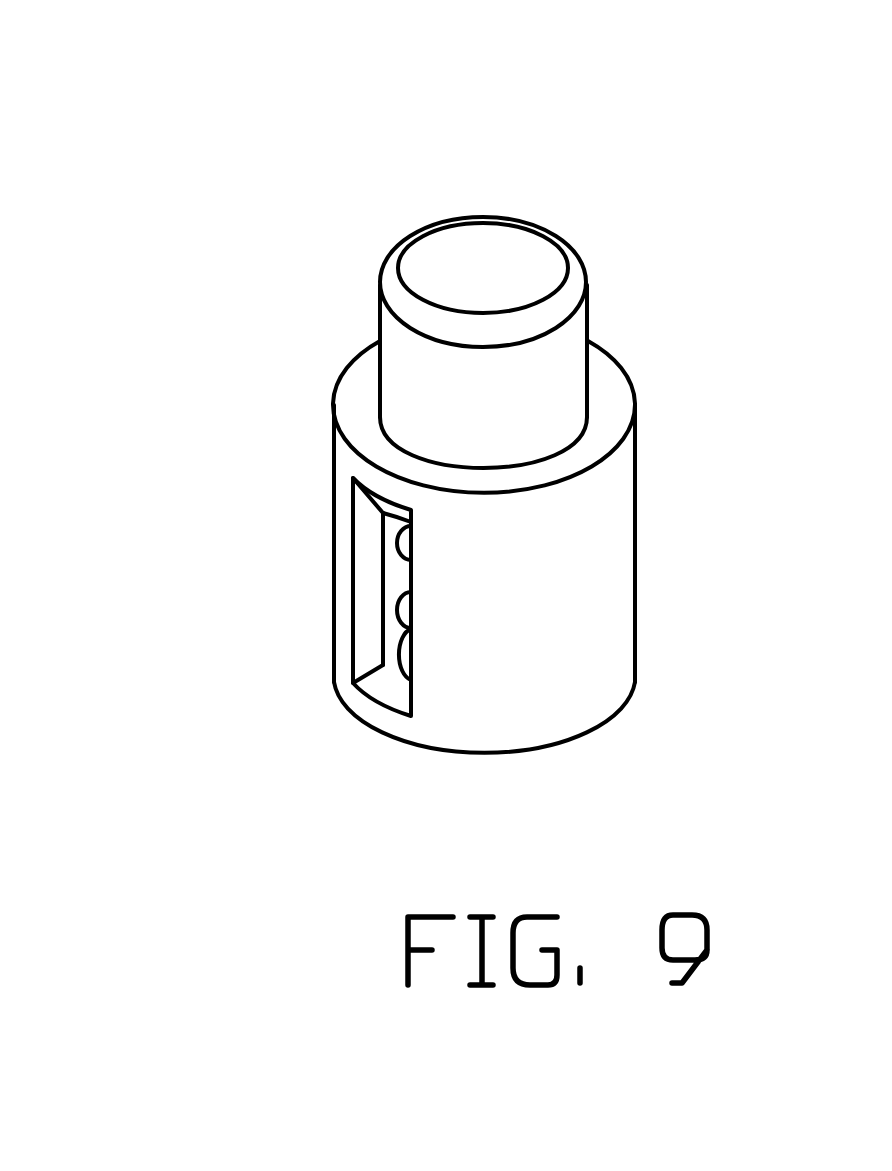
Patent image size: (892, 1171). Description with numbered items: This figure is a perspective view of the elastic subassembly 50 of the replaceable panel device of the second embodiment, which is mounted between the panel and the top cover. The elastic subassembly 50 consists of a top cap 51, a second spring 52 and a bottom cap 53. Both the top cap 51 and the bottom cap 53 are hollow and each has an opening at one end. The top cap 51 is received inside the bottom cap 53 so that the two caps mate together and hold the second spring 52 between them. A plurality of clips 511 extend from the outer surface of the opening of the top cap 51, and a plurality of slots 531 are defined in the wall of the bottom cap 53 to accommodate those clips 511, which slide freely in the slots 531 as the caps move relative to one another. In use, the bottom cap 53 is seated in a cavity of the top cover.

The elastic subassembly 50 is at (438, 433).
The top cap 51 is at (533, 375).
The clips 511 is at (367, 503).
The second spring 52 is at (413, 612).
The bottom cap 53 is at (573, 550).
The slots 531 is at (362, 548).